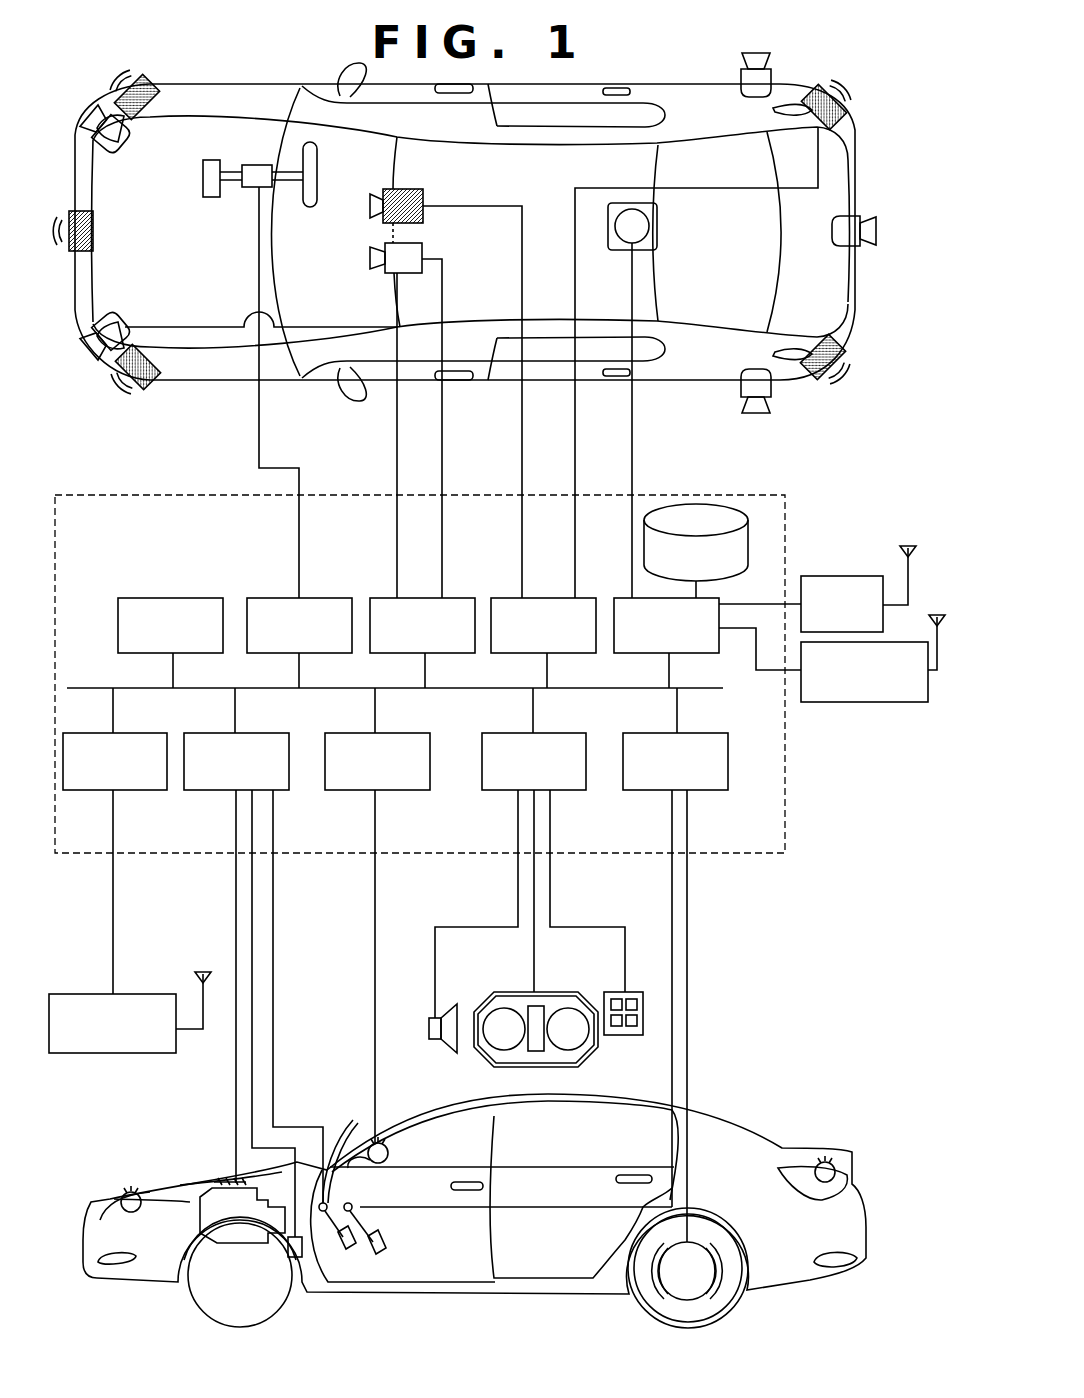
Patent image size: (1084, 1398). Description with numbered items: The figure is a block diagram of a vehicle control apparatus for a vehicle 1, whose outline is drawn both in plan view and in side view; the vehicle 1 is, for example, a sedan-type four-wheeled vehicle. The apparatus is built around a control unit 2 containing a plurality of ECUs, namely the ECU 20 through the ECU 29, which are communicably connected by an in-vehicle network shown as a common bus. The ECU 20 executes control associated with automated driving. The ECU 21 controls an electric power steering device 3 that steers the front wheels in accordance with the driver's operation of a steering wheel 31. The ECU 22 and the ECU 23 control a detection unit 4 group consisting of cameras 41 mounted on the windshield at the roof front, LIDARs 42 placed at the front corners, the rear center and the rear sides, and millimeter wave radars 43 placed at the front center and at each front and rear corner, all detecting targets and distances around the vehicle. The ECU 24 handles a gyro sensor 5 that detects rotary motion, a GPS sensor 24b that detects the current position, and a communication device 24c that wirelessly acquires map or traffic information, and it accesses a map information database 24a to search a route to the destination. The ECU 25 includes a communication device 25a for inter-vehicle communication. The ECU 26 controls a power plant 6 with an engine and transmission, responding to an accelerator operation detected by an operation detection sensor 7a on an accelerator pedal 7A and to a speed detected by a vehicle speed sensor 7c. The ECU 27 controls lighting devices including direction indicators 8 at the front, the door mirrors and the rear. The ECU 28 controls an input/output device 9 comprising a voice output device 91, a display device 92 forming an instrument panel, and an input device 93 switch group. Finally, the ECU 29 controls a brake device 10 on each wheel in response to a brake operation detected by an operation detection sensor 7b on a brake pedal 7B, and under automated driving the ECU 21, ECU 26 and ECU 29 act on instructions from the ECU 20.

The vehicle 1 is at (868, 142).
The control unit 2 is at (783, 856).
The electric power steering device 3 is at (210, 198).
The steering wheel 31 is at (310, 208).
The detection unit 4 is at (96, 88).
The camera 41 is at (424, 214).
The LIDAR 42 is at (125, 165).
The millimeter wave radar 43 is at (143, 114).
The gyro sensor 5 is at (658, 223).
The power plant 6 is at (203, 1185).
The operation detection sensor 7a is at (343, 1152).
The accelerator pedal 7A is at (358, 1250).
The operation detection sensor 7b is at (355, 1200).
The brake pedal 7B is at (380, 1238).
The vehicle speed sensor 7c is at (295, 1260).
The direction indicators 8 is at (122, 1198).
The input/output device 9 is at (452, 1073).
The voice output device 91 is at (430, 1020).
The display device 92 is at (492, 1004).
The input device 93 is at (620, 1036).
The brake device 10 is at (692, 1293).
The ECU 20 is at (195, 597).
The ECU 21 is at (322, 597).
The ECU 22 is at (415, 597).
The ECU 23 is at (556, 597).
The ECU 24 is at (618, 597).
The map information database 24a is at (696, 504).
The GPS sensor 24b is at (853, 576).
The communication device 24c is at (853, 703).
The ECU 25 is at (147, 790).
The communication device 25a is at (112, 1053).
The ECU 26 is at (215, 790).
The ECU 27 is at (410, 790).
The ECU 28 is at (572, 790).
The ECU 29 is at (707, 790).